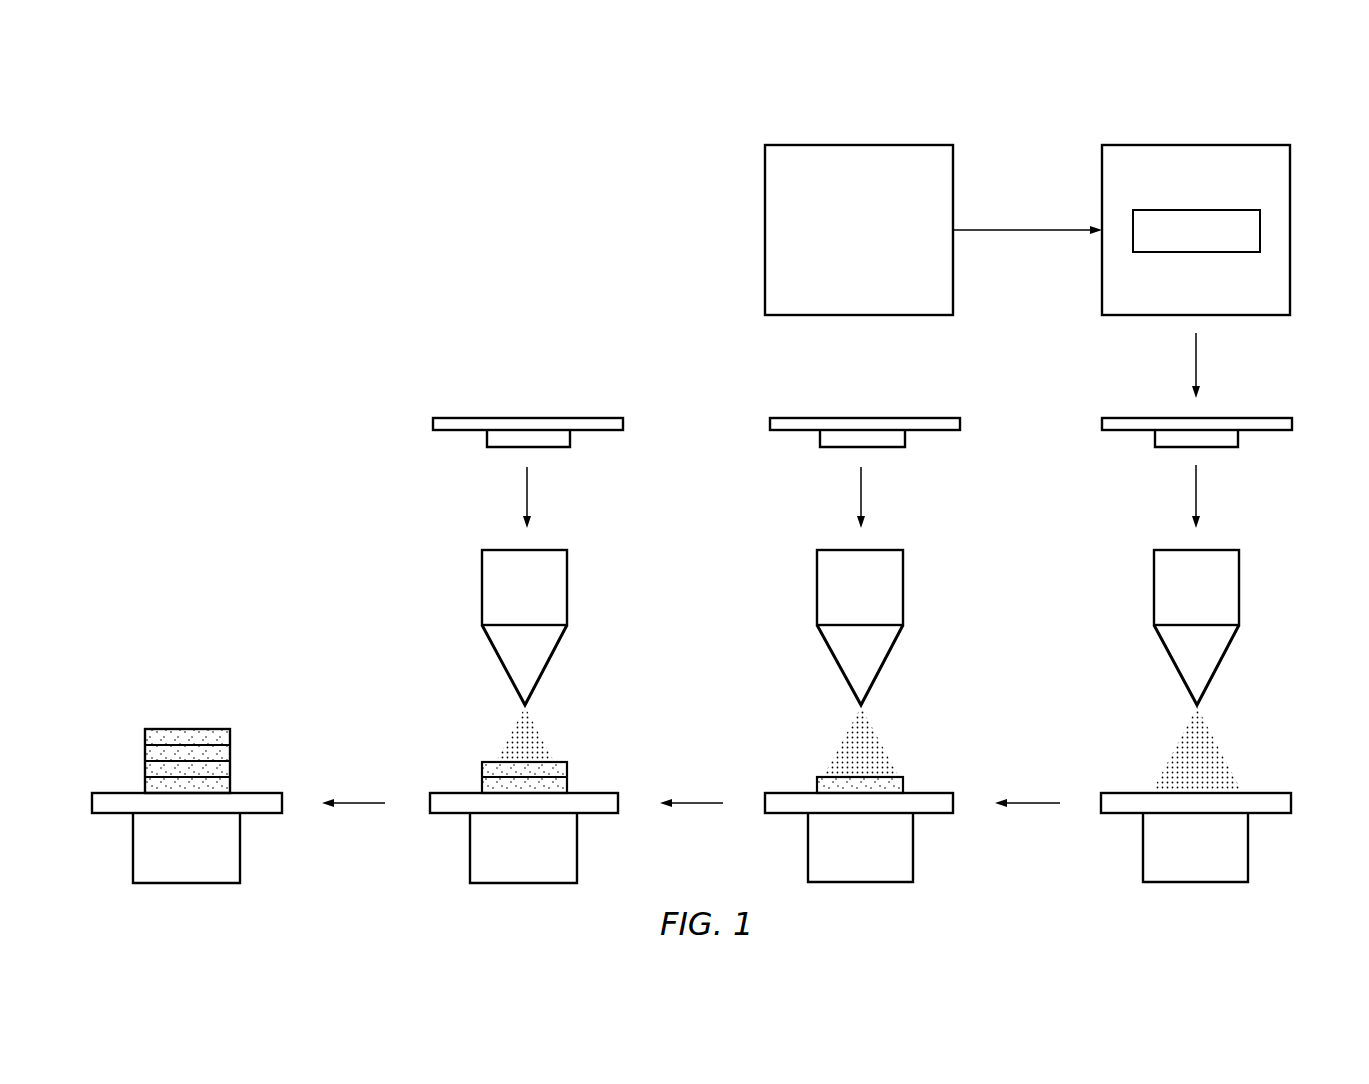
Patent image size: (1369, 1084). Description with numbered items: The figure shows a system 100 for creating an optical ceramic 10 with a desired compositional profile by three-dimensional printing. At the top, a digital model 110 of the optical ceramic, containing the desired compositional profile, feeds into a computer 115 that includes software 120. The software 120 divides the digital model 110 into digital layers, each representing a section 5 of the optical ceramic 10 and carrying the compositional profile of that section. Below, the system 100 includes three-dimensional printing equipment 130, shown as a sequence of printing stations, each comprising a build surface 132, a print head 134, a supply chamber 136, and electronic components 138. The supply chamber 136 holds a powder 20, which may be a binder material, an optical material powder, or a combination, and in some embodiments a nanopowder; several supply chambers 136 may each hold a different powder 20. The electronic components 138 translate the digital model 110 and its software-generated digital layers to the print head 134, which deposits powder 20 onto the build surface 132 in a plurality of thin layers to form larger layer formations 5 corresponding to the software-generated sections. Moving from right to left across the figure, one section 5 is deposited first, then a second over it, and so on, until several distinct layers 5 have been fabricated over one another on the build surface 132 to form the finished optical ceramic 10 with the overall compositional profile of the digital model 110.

The system 100 is at (598, 178).
The digital model 110 is at (858, 145).
The computer 115 is at (1262, 136).
The software 120 is at (1218, 210).
The 3D printing equipment 130 is at (418, 381).
The electronic components 138 is at (487, 437).
The supply chamber 136 is at (482, 587).
The print head 134 is at (500, 665).
The powder 20 is at (555, 724).
The section 5 is at (231, 785).
The optical ceramic 10 is at (133, 730).
The build surface 132 is at (108, 814).